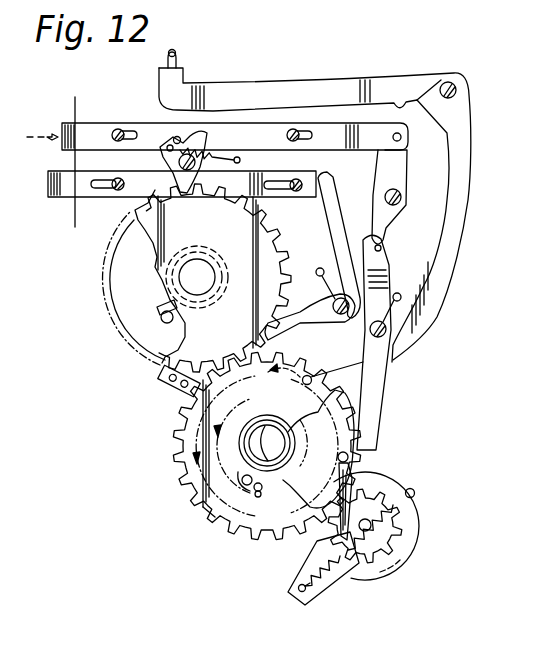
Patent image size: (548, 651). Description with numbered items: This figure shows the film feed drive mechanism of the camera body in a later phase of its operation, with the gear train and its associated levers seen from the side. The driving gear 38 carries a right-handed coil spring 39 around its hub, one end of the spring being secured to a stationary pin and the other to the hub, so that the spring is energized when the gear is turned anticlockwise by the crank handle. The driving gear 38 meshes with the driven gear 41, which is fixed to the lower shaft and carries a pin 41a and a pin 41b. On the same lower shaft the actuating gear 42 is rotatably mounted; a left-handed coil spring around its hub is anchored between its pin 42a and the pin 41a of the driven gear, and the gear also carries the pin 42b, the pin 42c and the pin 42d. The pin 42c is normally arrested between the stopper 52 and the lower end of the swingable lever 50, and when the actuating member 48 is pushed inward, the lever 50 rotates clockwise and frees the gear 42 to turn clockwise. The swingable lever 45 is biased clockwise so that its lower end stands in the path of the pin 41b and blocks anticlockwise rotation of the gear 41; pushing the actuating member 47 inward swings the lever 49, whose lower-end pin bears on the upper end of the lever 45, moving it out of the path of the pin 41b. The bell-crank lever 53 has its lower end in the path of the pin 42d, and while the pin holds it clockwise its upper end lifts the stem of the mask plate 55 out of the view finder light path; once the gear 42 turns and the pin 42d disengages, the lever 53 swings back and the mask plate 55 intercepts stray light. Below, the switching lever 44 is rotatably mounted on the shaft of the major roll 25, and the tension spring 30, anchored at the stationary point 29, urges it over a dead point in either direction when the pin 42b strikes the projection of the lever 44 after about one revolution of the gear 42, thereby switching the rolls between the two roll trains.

The mask plate 55 is at (178, 58).
The lever 53 is at (461, 176).
The actuating member 47 is at (72, 120).
The actuating member 48 is at (62, 198).
The swingable lever 49 is at (387, 162).
The swingable lever 50 is at (341, 234).
The driving gear 38 is at (268, 252).
The right-handed coil spring 39 is at (162, 306).
The stopper 52 is at (152, 377).
The actuating gear 42 is at (180, 493).
The pin 42a is at (256, 490).
The pin 42b is at (287, 537).
The pin 42c is at (175, 417).
The pin 42d is at (310, 376).
The driven gear 41 is at (320, 423).
The pin 41a is at (245, 484).
The pin 41b is at (363, 462).
The swingable lever 45 is at (390, 403).
The tension spring 30 is at (351, 585).
The major roll 25 is at (419, 520).
The stationary point 29 is at (413, 490).
The switching lever 44 is at (322, 600).